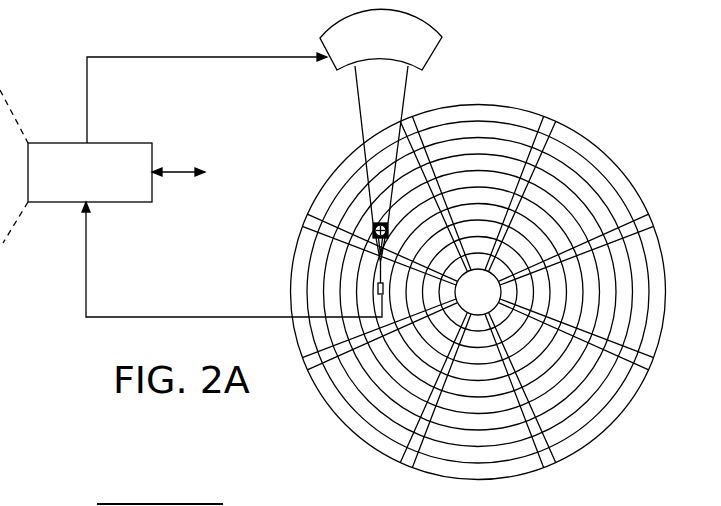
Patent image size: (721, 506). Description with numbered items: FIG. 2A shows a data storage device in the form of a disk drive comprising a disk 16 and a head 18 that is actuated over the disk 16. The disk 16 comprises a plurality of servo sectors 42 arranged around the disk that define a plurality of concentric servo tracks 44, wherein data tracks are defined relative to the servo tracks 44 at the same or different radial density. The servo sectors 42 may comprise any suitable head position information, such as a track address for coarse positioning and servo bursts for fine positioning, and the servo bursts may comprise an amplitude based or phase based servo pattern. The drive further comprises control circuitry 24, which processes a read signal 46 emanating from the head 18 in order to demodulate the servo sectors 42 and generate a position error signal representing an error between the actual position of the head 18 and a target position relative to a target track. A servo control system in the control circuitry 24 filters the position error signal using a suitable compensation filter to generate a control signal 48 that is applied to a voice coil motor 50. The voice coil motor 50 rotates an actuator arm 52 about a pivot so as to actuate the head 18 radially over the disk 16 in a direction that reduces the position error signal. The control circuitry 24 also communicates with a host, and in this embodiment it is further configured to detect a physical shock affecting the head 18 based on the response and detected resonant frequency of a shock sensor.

The disk 16 is at (477, 285).
The head 18 is at (368, 284).
The control circuitry 24 is at (122, 143).
The servo sectors 42 is at (477, 294).
The servo tracks 44 is at (469, 128).
The read signal 46 is at (218, 317).
The control signal 48 is at (87, 87).
The voice coil motor 50 is at (336, 67).
The actuator arm 52 is at (365, 114).